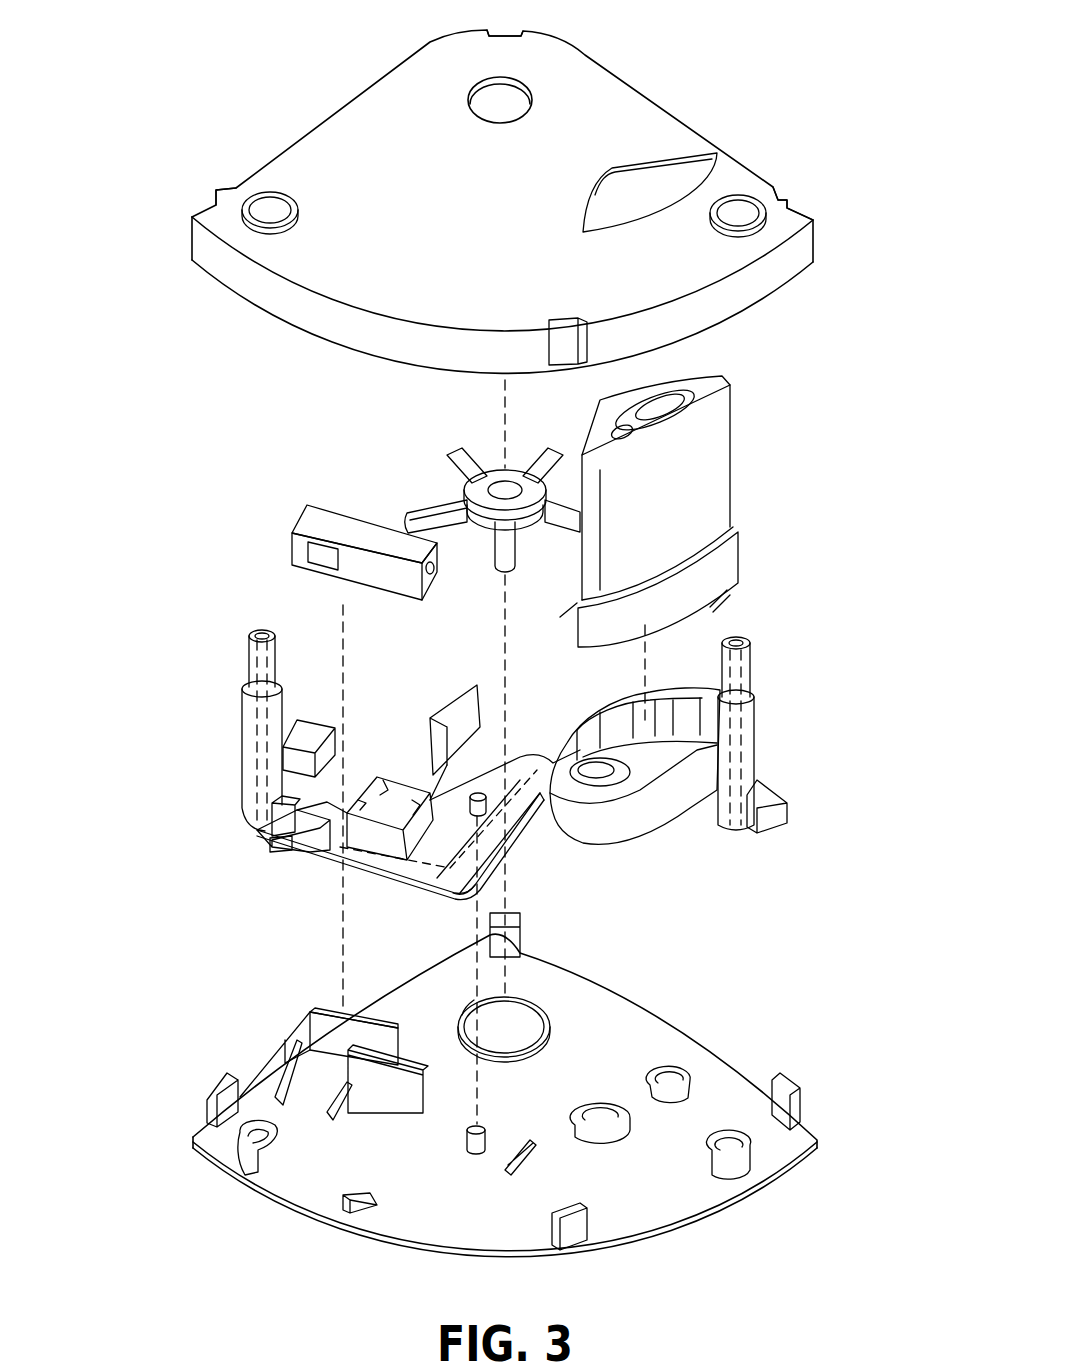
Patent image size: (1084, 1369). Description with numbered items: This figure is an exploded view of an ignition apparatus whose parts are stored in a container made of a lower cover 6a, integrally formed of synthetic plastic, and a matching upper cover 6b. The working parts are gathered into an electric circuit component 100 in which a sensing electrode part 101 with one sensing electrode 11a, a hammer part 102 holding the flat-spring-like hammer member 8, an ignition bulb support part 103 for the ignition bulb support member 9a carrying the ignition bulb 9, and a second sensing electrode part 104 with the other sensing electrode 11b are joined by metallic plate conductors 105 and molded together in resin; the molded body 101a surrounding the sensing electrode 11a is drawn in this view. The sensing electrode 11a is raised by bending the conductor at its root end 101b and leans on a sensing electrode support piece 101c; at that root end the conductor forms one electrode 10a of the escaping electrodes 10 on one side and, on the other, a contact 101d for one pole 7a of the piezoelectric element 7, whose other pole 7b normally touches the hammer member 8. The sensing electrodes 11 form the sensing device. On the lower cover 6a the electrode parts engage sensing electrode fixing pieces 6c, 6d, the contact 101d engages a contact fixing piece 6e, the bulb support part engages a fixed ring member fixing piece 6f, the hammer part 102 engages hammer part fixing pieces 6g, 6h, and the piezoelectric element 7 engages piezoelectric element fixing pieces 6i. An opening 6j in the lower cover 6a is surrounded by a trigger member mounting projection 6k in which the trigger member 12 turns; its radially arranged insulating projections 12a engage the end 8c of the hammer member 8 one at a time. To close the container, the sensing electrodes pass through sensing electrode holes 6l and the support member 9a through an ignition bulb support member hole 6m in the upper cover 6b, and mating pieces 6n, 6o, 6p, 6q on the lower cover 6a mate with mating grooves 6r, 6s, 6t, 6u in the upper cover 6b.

The lower cover 6a is at (643, 1040).
The upper cover 6b is at (623, 110).
The sensing electrode fixing piece 6c is at (243, 1163).
The sensing electrode fixing piece 6d is at (737, 1173).
The contact fixing piece 6e is at (330, 1107).
The fixed ring member fixing piece 6f is at (688, 1087).
The hammer part fixing piece 6g is at (520, 1157).
The hammer part fixing piece 6h is at (470, 1142).
The piezoelectric element fixing pieces 6i is at (350, 1057).
The opening 6j is at (520, 1027).
The trigger member mounting projection 6k is at (463, 1010).
The sensing electrode holes 6l is at (265, 200).
The ignition bulb support member hole 6m is at (665, 177).
The mating piece 6n is at (207, 1113).
The mating piece 6o is at (575, 1228).
The mating piece 6p is at (793, 1120).
The mating piece 6q is at (490, 940).
The mating groove 6r is at (216, 198).
The mating groove 6s is at (558, 338).
The mating groove 6t is at (788, 200).
The mating groove 6u is at (507, 33).
The piezoelectric element 7 is at (307, 522).
The pole of the piezoelectric element 7a is at (313, 560).
The pole of the piezoelectric element 7b is at (435, 575).
The hammer member 8 is at (467, 747).
The end of the hammer member 8c is at (440, 705).
The ignition bulb 9 is at (673, 412).
The ignition bulb support member 9a is at (705, 495).
The escaping electrodes 10 is at (313, 840).
The escaping electrode 10a is at (310, 828).
The sensing electrodes 11 is at (270, 630).
The sensing electrode 11a is at (257, 733).
The sensing electrode 11b is at (738, 672).
The trigger member 12 is at (492, 470).
The projections 12a is at (423, 517).
The electric circuit component 100 is at (335, 754).
The sensing electrode part 101 is at (256, 822).
The holder cylinder 101a is at (250, 715).
The root end of the sensing electrode 101b is at (275, 833).
The sensing electrode support piece 101c is at (320, 785).
The contact 101d is at (312, 722).
The hammer part 102 is at (455, 853).
The ignition bulb support part 103 is at (633, 822).
The sensing electrode part 104 is at (750, 775).
The metallic plate conductors 105 is at (495, 817).